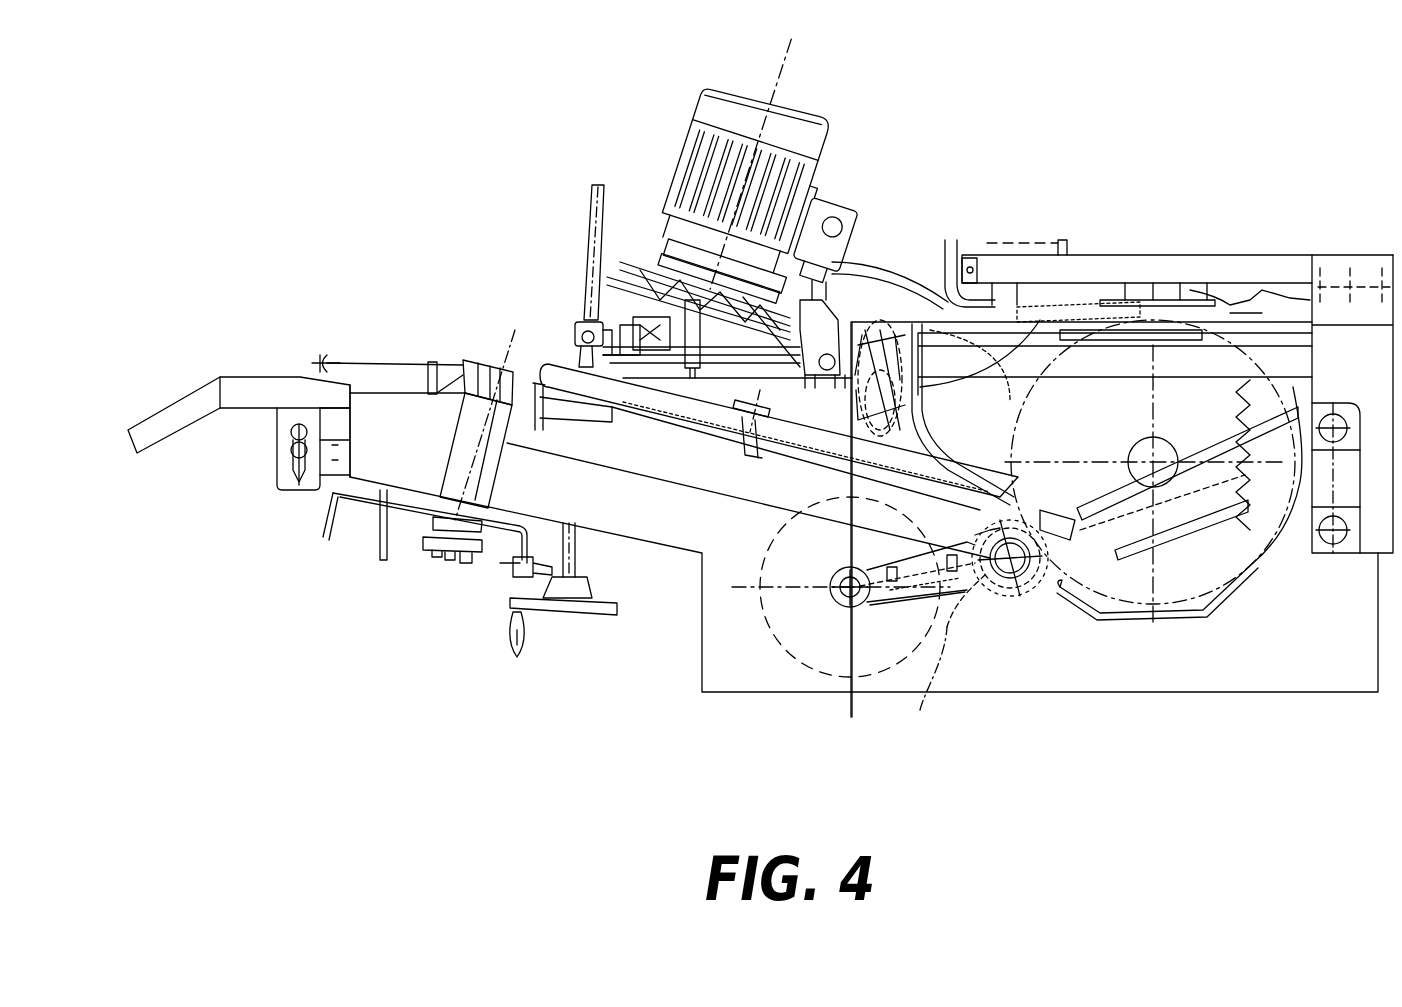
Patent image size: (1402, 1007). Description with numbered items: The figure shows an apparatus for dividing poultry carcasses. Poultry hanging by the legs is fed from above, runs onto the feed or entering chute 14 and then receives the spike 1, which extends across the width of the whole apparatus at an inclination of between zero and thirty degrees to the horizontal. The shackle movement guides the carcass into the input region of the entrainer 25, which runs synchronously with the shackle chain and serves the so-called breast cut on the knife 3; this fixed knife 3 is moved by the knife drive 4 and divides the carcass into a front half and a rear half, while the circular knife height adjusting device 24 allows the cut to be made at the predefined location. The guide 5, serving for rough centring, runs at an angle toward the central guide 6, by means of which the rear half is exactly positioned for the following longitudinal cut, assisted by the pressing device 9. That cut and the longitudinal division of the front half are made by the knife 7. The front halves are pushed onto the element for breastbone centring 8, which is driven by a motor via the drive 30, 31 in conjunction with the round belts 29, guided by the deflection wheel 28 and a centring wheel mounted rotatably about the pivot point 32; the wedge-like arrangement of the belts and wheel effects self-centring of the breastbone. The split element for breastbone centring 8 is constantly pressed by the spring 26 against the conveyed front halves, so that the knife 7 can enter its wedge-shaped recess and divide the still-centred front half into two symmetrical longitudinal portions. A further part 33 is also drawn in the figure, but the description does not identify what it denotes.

The spike 1 is at (453, 312).
The knife 3 is at (673, 258).
The knife drive 4 is at (810, 127).
The guide 5 is at (868, 266).
The central guide 6 is at (1140, 255).
The knife 7 is at (1270, 400).
The element for breastbone centring 8 is at (962, 664).
The pressing device 9 is at (1020, 337).
The feed or entering chute 14 is at (178, 420).
The circular knife height adjusting device 24 is at (613, 622).
The entrainer 25 is at (505, 370).
The spring 26 is at (1247, 397).
The deflection wheel 28 is at (857, 604).
The round belts 29 is at (978, 594).
The drive 30 is at (945, 660).
The drive 31 is at (950, 623).
The pivot point 32 is at (845, 600).
The blade guard 33 is at (1077, 513).